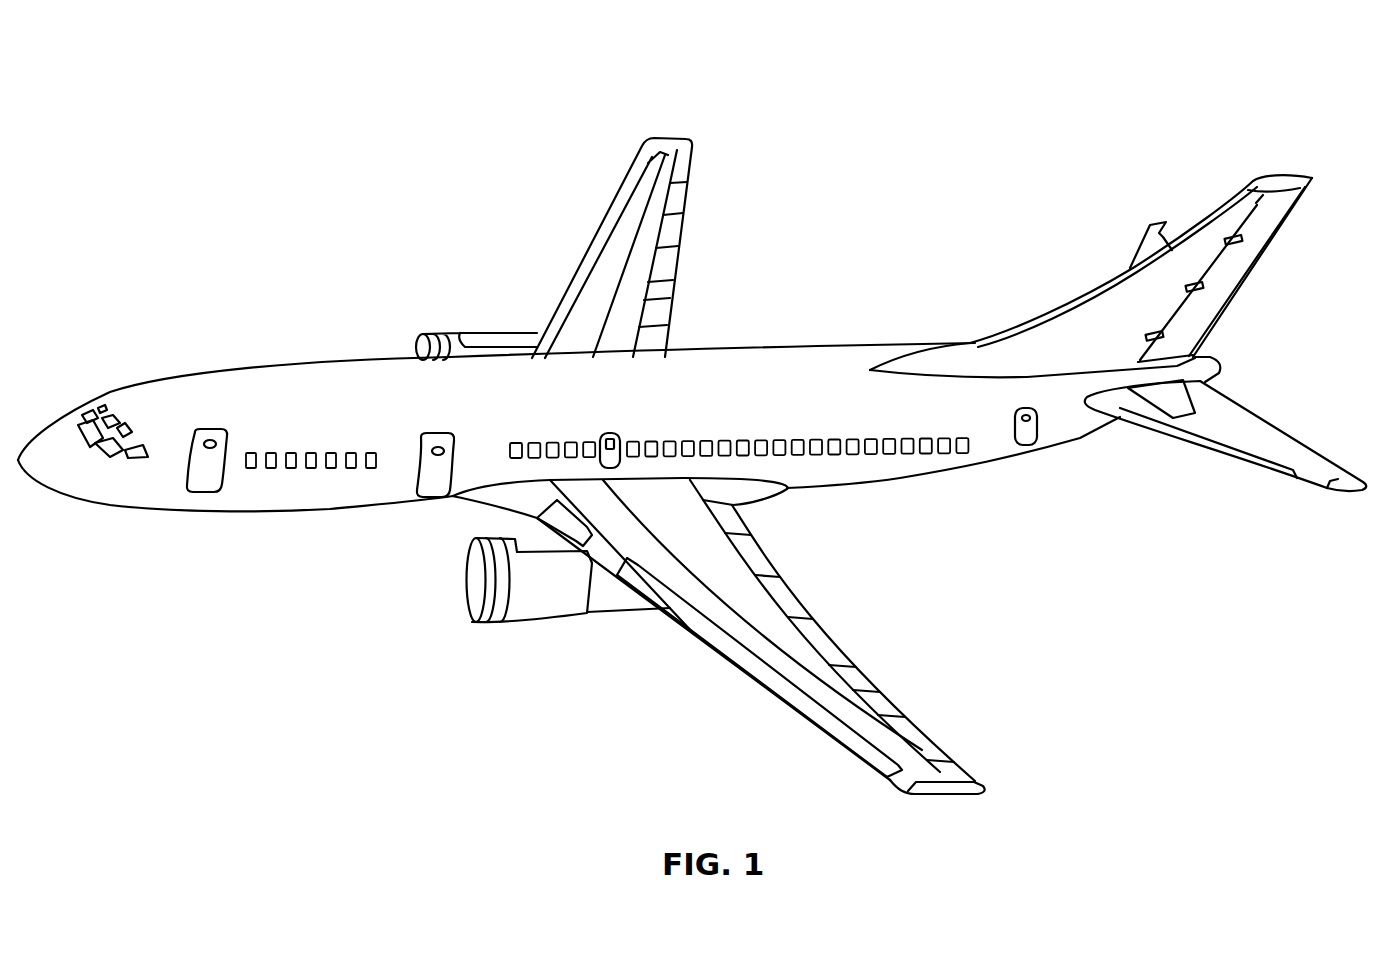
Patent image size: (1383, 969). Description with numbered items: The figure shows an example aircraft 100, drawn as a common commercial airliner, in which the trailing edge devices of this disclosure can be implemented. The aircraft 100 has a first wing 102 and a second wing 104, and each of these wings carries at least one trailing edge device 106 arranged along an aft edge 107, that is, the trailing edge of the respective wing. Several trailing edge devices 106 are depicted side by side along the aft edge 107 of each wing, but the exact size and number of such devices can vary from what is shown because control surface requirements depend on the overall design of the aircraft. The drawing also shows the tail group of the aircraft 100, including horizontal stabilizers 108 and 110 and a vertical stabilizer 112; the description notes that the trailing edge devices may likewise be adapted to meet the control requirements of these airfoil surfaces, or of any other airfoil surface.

The aircraft 100 is at (218, 86).
The first wing 102 is at (793, 703).
The second wing 104 is at (600, 225).
The trailing edge device 106 is at (730, 522).
The aft edge 107 is at (883, 690).
The horizontal stabilizer 108 is at (1260, 420).
The horizontal stabilizer 110 is at (1138, 250).
The vertical stabilizer 112 is at (1266, 260).